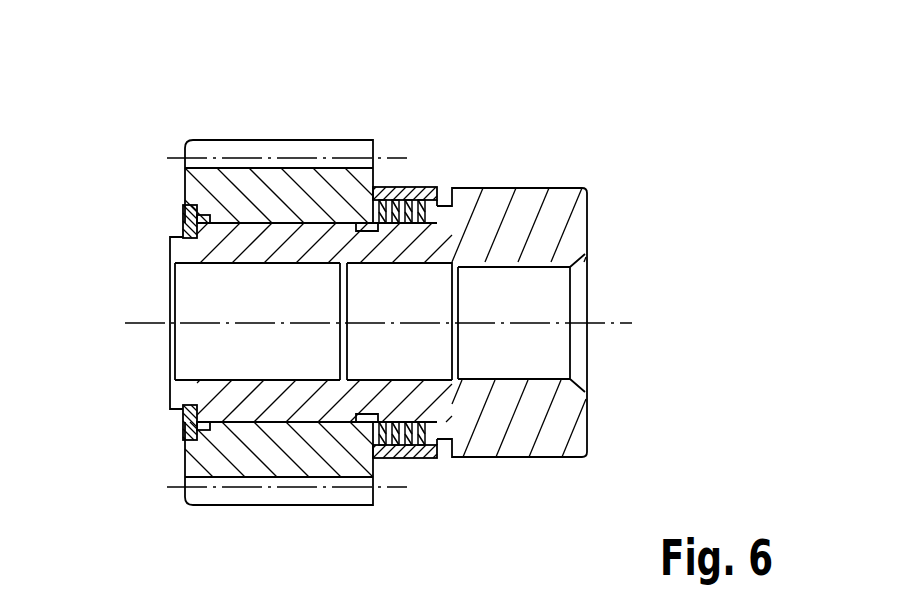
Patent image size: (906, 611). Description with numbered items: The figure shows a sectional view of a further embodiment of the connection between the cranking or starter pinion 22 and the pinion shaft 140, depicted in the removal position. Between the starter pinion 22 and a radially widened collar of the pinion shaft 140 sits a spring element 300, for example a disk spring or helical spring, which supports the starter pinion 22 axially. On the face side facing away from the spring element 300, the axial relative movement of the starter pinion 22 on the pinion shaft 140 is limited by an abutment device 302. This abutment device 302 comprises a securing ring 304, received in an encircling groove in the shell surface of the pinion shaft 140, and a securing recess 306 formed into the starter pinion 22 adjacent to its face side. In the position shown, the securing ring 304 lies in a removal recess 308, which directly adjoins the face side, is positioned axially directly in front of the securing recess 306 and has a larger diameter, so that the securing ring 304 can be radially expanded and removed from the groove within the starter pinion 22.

The starter pinion 22 is at (258, 192).
The pinion shaft 140 is at (527, 222).
The spring element 300 is at (408, 460).
The abutment device 302 is at (160, 213).
The securing ring 304 is at (184, 412).
The securing recess 306 is at (201, 211).
The removal recess 308 is at (184, 433).